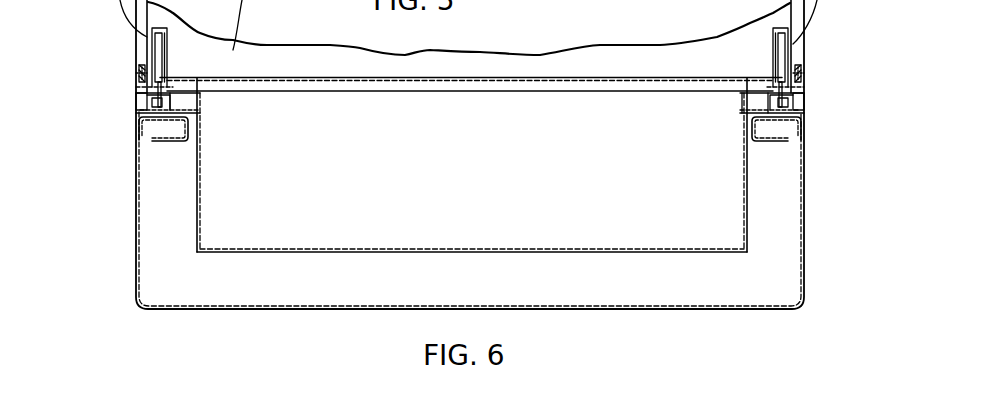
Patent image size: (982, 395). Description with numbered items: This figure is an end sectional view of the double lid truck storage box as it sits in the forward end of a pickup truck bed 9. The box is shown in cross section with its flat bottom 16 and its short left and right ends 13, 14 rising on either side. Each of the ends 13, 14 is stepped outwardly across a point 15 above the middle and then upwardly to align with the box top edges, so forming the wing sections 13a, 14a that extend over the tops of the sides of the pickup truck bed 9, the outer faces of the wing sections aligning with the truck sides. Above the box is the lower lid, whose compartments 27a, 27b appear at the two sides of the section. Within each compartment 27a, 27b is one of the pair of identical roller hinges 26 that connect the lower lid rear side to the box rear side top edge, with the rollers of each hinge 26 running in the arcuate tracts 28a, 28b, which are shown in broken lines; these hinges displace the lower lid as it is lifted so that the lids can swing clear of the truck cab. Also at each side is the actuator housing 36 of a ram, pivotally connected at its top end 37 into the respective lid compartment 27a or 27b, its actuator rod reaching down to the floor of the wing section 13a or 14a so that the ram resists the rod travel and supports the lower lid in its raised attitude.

The pickup truck bed 9 is at (137, 208).
The left end 13 is at (196, 168).
The wing section 13a is at (137, 116).
The right end 14 is at (750, 170).
The wing section 14a is at (803, 118).
The point 15 is at (742, 111).
The flat bottom 16 is at (345, 250).
The roller hinge 26 is at (137, 85).
The lid compartment 27a is at (138, 70).
The lid compartment 27b is at (803, 68).
The arcuate tract 28a is at (138, 63).
The arcuate tract 28b is at (803, 63).
The actuator housing 36 is at (151, 54).
The top end 37 is at (146, 37).